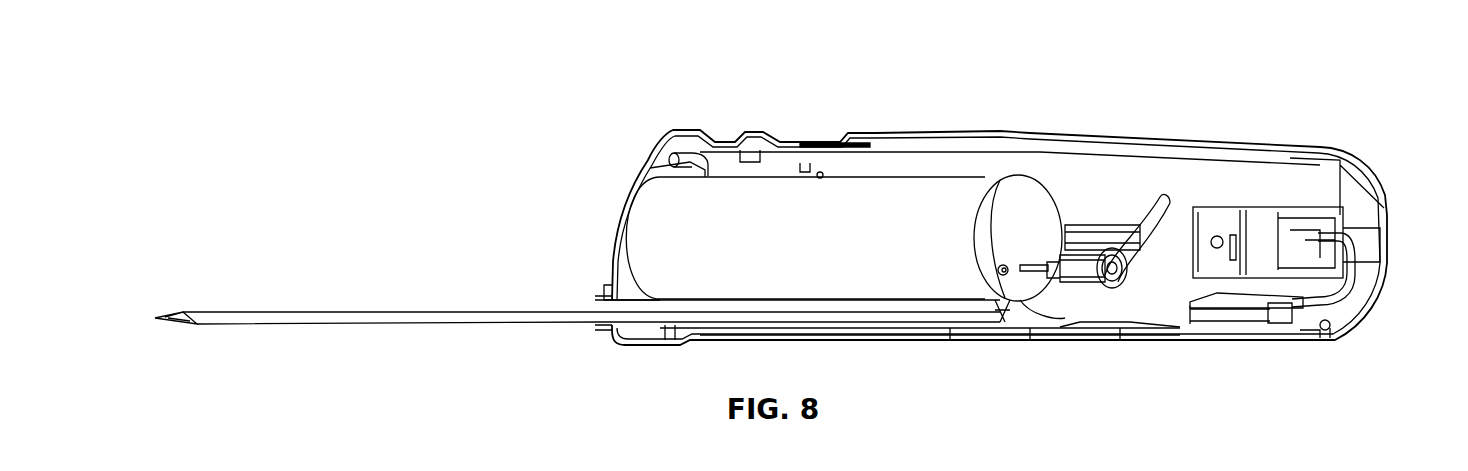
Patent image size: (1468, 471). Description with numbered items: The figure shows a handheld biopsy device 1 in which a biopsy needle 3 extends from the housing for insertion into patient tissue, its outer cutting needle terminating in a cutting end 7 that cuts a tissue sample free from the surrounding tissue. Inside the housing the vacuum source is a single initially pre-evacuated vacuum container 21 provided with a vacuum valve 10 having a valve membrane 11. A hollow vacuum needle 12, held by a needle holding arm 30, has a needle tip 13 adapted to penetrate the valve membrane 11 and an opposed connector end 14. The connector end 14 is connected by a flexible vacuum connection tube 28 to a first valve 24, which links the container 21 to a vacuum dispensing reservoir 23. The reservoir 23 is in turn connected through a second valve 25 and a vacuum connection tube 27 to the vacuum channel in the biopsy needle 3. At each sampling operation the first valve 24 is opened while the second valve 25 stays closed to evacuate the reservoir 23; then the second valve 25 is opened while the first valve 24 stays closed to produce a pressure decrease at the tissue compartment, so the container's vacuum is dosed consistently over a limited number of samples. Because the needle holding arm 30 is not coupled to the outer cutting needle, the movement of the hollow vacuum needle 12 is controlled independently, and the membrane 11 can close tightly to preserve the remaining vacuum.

The biopsy device 1 is at (597, 110).
The biopsy needle 3 is at (388, 323).
The cutting end 7 is at (183, 323).
The vacuum valve 10 is at (1003, 265).
The valve membrane 11 is at (1000, 300).
The hollow vacuum needle 12 is at (1040, 290).
The needle tip 13 is at (1022, 268).
The connector end 14 is at (1060, 243).
The initially pre-evacuated vacuum container 21 is at (910, 232).
The vacuum dispensing reservoir 23 is at (1265, 196).
The first valve 24 is at (1213, 238).
The second valve 25 is at (1332, 237).
The vacuum connection tube 27 is at (1330, 302).
The flexible vacuum connection tube 28 is at (1140, 258).
The needle holding arm 30 is at (1122, 255).